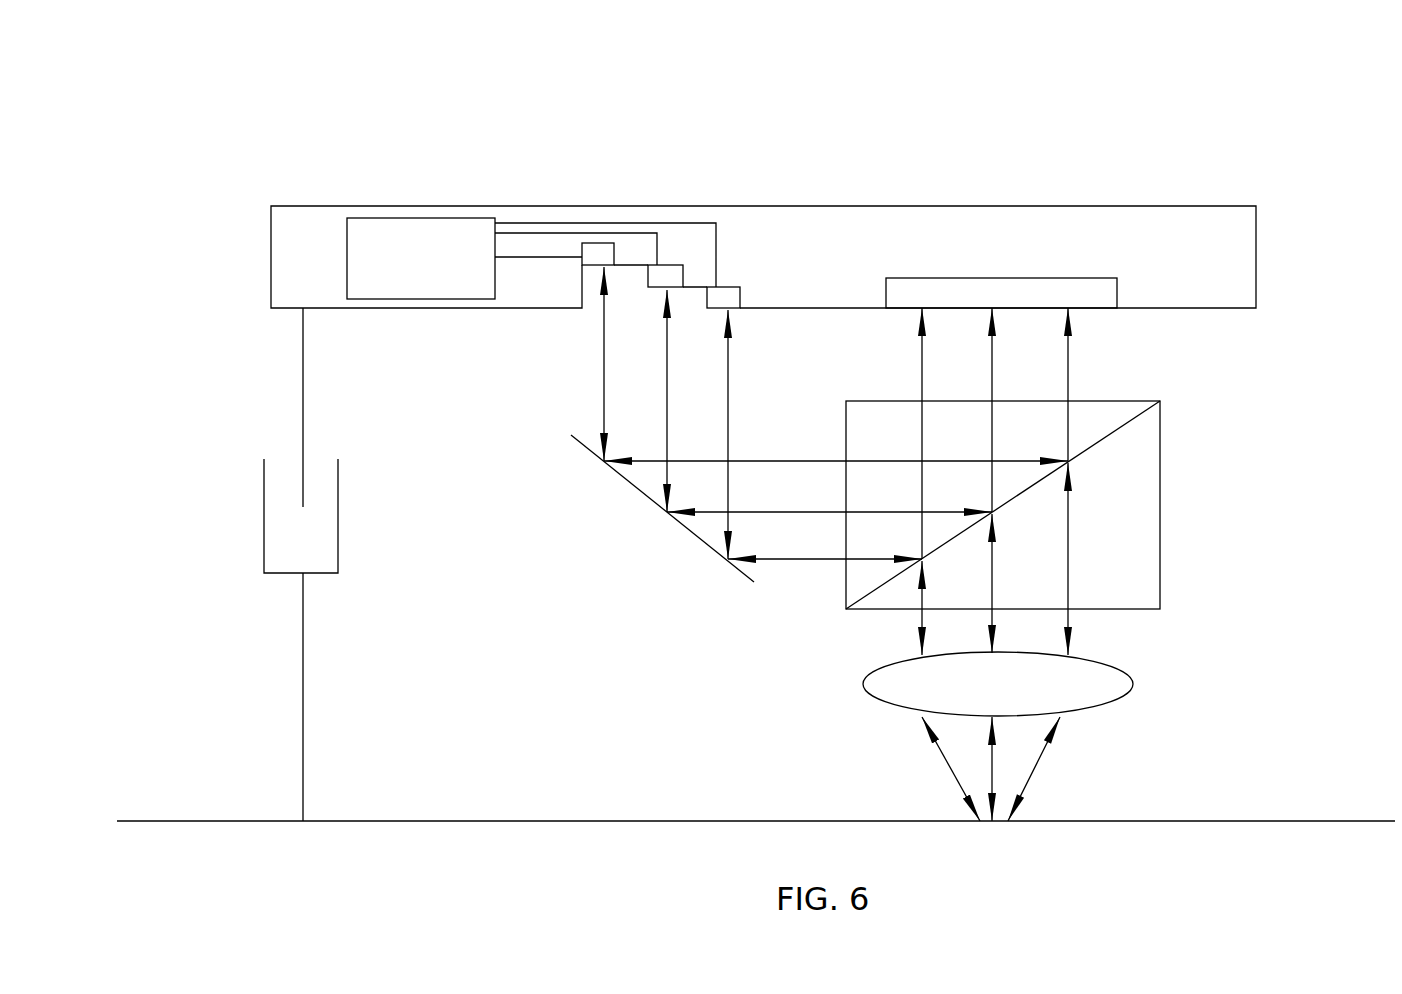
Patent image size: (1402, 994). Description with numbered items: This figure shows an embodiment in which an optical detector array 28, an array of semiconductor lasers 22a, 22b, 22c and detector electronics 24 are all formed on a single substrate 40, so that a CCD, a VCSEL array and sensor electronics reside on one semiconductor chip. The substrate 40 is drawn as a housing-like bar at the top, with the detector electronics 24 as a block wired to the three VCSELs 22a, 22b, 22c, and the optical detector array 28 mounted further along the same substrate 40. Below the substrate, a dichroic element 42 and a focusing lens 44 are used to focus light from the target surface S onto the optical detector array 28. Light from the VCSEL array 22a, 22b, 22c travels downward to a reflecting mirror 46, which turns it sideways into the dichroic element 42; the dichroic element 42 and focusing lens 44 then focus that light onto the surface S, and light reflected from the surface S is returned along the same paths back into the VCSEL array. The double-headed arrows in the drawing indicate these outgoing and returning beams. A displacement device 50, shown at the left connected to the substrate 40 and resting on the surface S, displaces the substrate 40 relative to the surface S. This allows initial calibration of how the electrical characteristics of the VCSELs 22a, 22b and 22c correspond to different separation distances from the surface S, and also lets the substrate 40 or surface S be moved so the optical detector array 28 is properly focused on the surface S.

The semiconductor laser 22a is at (598, 253).
The semiconductor laser 22b is at (667, 277).
The semiconductor laser 22c is at (730, 297).
The detector electronics 24 is at (398, 240).
The optical detector array 28 is at (1033, 277).
The substrate 40 is at (1257, 230).
The dichroic element 42 is at (1127, 505).
The focusing lens 44 is at (1073, 687).
The reflecting mirror 46 is at (636, 490).
The displacement device 50 is at (264, 517).
The target surface S is at (1192, 821).